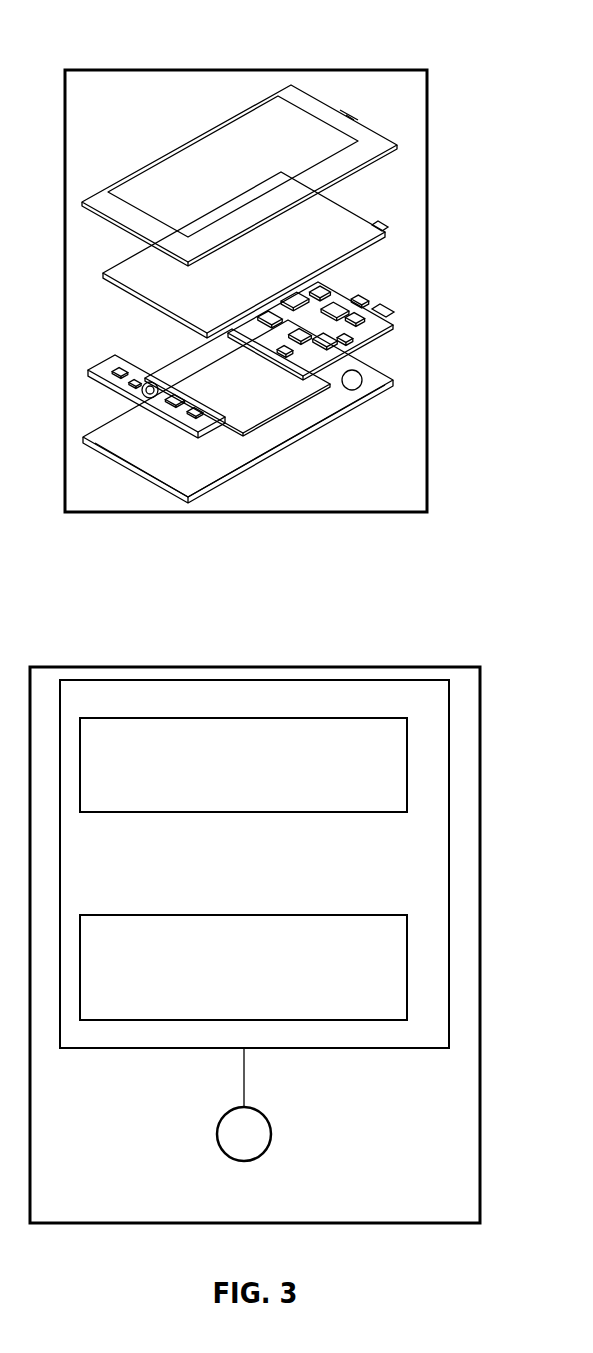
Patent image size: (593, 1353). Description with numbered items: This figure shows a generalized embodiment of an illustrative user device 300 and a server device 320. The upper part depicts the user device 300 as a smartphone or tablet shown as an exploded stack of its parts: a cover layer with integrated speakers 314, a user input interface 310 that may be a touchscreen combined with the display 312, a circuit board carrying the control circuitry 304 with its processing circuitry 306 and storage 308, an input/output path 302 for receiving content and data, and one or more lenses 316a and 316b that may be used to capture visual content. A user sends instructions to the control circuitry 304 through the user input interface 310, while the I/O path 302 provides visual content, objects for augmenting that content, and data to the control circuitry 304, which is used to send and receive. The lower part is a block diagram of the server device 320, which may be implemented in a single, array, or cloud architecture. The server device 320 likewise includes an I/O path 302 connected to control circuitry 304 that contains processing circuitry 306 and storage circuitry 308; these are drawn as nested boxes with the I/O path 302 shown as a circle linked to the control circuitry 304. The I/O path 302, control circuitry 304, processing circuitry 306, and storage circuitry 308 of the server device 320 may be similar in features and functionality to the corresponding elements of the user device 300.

The user device 300 is at (163, 66).
The I/O path 302 is at (140, 395).
The control circuitry 304 is at (264, 665).
The processing circuitry 306 is at (388, 410).
The storage 308 is at (322, 300).
The user input interface 310 is at (364, 154).
The display 312 is at (364, 232).
The speakers 314 is at (313, 149).
The lens 316a is at (370, 129).
The lens 316b is at (355, 393).
The server device 320 is at (332, 663).